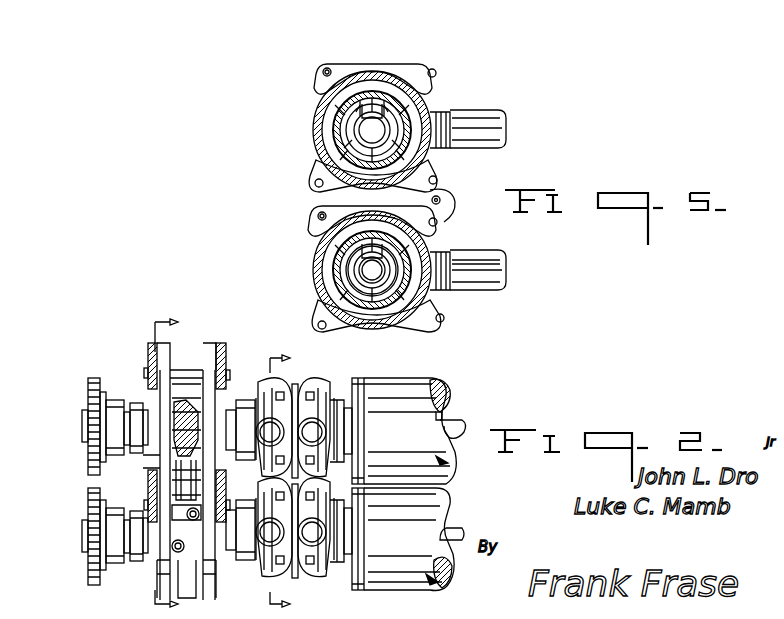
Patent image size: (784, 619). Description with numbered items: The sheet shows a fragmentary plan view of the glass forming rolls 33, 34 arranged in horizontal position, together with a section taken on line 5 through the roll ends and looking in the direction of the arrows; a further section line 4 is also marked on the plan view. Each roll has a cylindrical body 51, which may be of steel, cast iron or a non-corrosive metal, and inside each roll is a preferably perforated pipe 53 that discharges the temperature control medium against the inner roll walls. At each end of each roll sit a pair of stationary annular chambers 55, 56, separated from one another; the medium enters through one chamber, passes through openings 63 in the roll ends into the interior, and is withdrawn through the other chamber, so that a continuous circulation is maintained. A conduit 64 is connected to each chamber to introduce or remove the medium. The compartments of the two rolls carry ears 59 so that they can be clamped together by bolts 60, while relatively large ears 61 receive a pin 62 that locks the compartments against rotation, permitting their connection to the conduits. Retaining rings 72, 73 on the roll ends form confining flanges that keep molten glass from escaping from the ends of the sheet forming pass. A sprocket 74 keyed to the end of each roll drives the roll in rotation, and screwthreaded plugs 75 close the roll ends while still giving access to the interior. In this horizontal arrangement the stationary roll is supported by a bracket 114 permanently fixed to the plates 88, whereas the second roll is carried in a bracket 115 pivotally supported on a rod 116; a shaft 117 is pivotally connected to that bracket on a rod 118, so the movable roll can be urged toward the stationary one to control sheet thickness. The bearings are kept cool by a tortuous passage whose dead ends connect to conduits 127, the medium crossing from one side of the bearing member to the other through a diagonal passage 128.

In FIG. 2, the section line 4- 4 is at (156, 460).
In FIG. 2, the section line 5- 5 is at (288, 480).
In FIG. 2, the roll 33 is at (447, 462).
In FIG. 2, the roll 34 is at (446, 586).
In FIG. 2, the cylindrical body 51 is at (440, 498).
In FIG. 5, the perforated pipe 53 is at (360, 134).
In FIG. 2, the perforated pipe 53 is at (448, 418).
In FIG. 5, the annular chamber 55 is at (330, 140).
In FIG. 2, the annular chamber 55 is at (276, 448).
In FIG. 2, the annular chamber 56 is at (312, 462).
In FIG. 5, the ears 59 is at (322, 78).
In FIG. 2, the ears 59 is at (284, 390).
In FIG. 5, the bolts 60 is at (432, 66).
In FIG. 2, the bolts 60 is at (310, 392).
In FIG. 5, the large ears 61 is at (452, 208).
In FIG. 5, the pin 62 is at (440, 196).
In FIG. 2, the pin 62 is at (262, 496).
In FIG. 5, the openings 63 is at (384, 98).
In FIG. 5, the conduit 64 is at (505, 112).
In FIG. 2, the conduit 64 is at (310, 433).
In FIG. 2, the retaining ring 72 is at (358, 584).
In FIG. 2, the retaining ring 73 is at (364, 378).
In FIG. 2, the sprocket 74 is at (92, 476).
In FIG. 2, the screwthreaded plug 75 is at (90, 540).
In FIG. 2, the plates 88 is at (226, 352).
In FIG. 2, the bracket 114 is at (212, 370).
In FIG. 2, the bracket 115 is at (207, 560).
In FIG. 2, the rod 116 is at (146, 472).
In FIG. 2, the shaft 117 is at (190, 596).
In FIG. 2, the rod 118 is at (160, 580).
In FIG. 2, the conduits 127 is at (172, 550).
In FIG. 2, the diagonal passage 128 is at (180, 400).